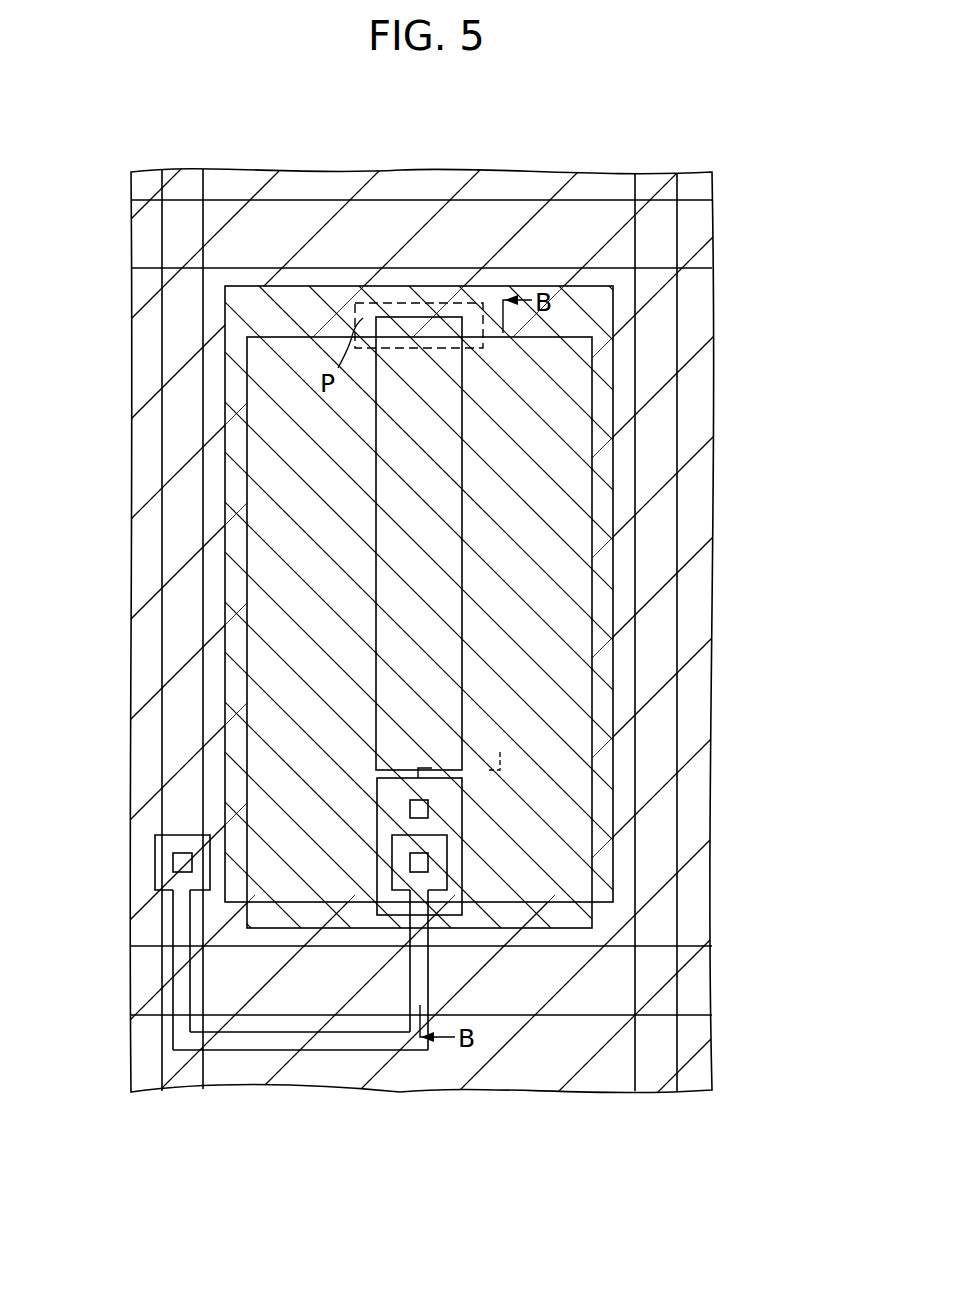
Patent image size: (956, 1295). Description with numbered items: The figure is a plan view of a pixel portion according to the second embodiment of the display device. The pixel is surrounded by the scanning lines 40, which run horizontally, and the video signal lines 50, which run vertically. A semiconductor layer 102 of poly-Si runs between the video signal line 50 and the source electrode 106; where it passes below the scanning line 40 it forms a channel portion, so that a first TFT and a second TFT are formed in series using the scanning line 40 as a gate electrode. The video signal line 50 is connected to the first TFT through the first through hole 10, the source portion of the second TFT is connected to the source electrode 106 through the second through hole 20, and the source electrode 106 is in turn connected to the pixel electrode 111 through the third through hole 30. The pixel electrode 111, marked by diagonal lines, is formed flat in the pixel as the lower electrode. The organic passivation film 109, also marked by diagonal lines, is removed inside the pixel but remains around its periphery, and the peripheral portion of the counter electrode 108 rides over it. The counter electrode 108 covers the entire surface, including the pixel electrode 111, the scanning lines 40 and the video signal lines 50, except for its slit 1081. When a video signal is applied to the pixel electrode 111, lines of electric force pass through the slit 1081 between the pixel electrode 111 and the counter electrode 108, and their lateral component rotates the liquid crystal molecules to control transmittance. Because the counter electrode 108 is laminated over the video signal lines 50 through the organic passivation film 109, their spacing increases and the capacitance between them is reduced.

The first through hole 10 is at (173, 860).
The second through hole 20 is at (407, 857).
The third through hole 30 is at (407, 808).
The scanning line 40 is at (694, 233).
The video signal line 50 is at (184, 192).
The semiconductor layer 102 is at (328, 1045).
The source electrode 106 is at (450, 807).
The counter electrode 108 is at (565, 612).
The organic passivation film 109 is at (625, 701).
The pixel electrode 111 is at (613, 560).
The slit 1081 is at (445, 489).